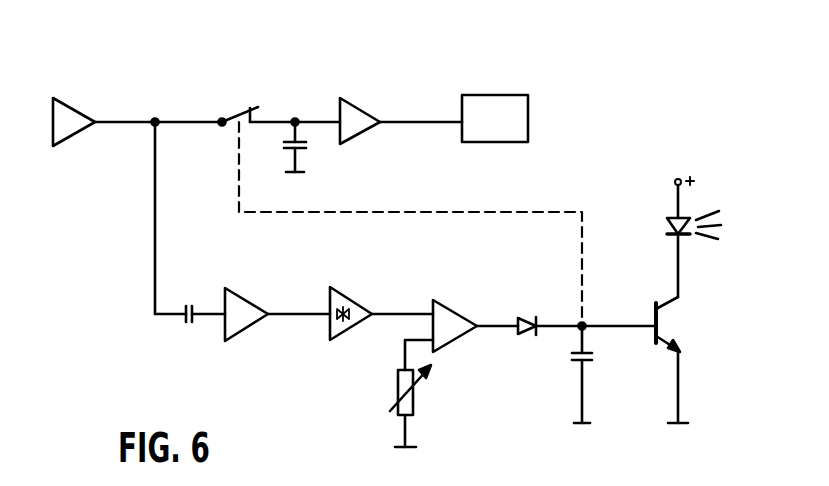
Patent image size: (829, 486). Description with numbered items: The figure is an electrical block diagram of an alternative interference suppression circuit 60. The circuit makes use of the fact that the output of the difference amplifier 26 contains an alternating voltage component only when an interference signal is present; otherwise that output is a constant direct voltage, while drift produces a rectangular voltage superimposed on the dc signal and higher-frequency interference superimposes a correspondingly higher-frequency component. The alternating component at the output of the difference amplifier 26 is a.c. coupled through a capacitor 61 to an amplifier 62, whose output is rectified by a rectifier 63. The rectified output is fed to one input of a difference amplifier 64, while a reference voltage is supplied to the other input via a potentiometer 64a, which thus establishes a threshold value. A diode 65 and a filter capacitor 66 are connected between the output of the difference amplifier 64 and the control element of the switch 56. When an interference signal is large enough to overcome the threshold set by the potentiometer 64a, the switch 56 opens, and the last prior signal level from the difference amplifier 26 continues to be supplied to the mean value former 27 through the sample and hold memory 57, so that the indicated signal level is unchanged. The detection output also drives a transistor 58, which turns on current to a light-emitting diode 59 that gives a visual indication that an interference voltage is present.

The difference amplifier 26 is at (68, 106).
The switch 56 is at (239, 110).
The sample and hold memory 57 is at (322, 130).
The mean value former 27 is at (486, 95).
The capacitor 61 is at (184, 325).
The amplifier 62 is at (245, 305).
The rectifier 63 is at (348, 322).
The interference suppression circuit 60 is at (333, 348).
The difference amplifier 64 is at (450, 318).
The potentiometer 64a is at (412, 400).
The diode 65 is at (533, 338).
The filter capacitor 66 is at (590, 358).
The transistor 58 is at (668, 322).
The light-emitting diode 59 is at (666, 222).